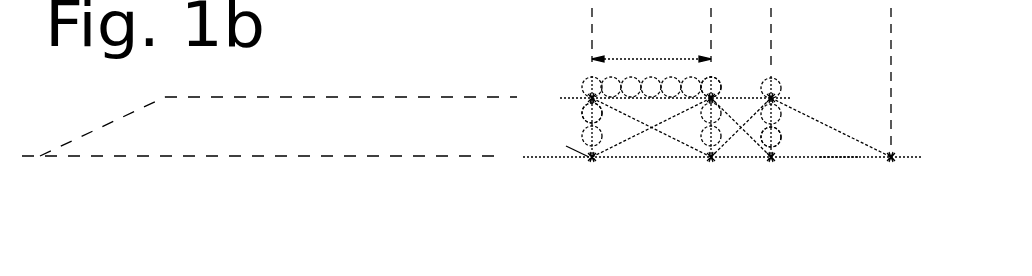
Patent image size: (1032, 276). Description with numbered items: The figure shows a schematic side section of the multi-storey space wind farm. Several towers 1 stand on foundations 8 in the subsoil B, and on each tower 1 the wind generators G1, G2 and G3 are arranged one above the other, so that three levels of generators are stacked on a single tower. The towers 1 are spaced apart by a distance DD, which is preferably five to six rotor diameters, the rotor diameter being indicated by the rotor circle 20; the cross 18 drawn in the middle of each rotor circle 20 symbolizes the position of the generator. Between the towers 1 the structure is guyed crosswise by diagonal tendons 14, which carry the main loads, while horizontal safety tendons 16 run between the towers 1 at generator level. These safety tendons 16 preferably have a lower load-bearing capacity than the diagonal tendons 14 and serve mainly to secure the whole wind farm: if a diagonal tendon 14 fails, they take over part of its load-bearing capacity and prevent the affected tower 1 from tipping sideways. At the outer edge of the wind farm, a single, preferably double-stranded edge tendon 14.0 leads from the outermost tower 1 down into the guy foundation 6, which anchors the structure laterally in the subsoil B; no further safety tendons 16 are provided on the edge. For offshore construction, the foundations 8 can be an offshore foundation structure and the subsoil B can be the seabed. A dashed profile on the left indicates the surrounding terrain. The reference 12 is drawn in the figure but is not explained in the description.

The tower 1 is at (597, 120).
The guy foundation 6 is at (896, 156).
The foundation 8 is at (598, 160).
The upper chord 12 is at (780, 99).
The tendon 14 is at (677, 140).
The edge tendon 14.0 is at (826, 126).
The safety tendon 16 is at (651, 127).
The cross 18 is at (716, 93).
The rotor circle 20 is at (715, 87).
The subsoil B is at (836, 160).
The distance DD is at (651, 53).
The wind generator G1 is at (578, 135).
The wind generator G2 is at (578, 112).
The wind generator G3 is at (578, 83).